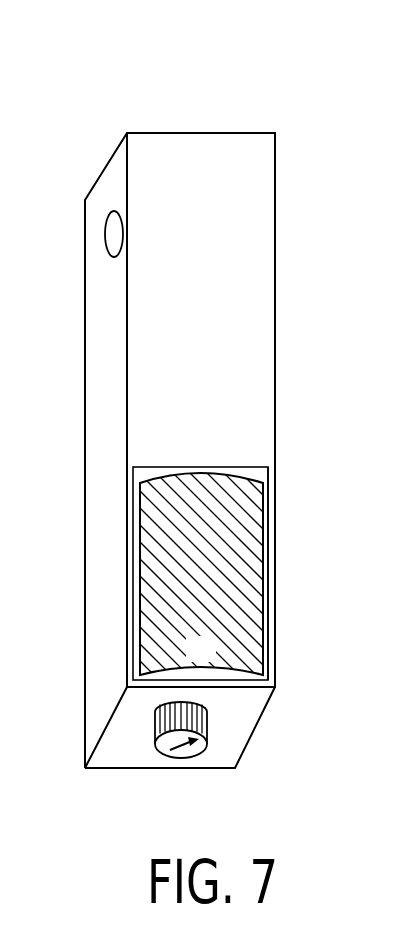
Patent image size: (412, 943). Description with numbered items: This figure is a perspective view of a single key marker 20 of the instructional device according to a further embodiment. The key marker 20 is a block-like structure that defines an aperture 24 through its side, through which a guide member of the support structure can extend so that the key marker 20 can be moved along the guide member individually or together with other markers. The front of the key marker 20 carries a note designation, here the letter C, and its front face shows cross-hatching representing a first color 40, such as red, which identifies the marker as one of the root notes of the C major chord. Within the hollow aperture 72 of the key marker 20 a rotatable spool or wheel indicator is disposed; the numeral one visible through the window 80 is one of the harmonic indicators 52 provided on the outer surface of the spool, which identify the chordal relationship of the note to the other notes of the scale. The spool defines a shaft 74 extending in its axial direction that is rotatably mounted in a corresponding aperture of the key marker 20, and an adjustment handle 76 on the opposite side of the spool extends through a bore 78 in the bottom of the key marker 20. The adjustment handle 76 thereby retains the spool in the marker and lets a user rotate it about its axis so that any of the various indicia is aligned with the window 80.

The key marker 20 is at (350, 112).
The aperture 24 is at (113, 235).
The first color 40 is at (256, 525).
The harmonic indicator 52 is at (172, 649).
The hollow aperture 72 is at (140, 481).
The shaft 74 is at (268, 597).
The adjustment handle 76 is at (181, 758).
The bore 78 is at (158, 705).
The window 80 is at (273, 650).